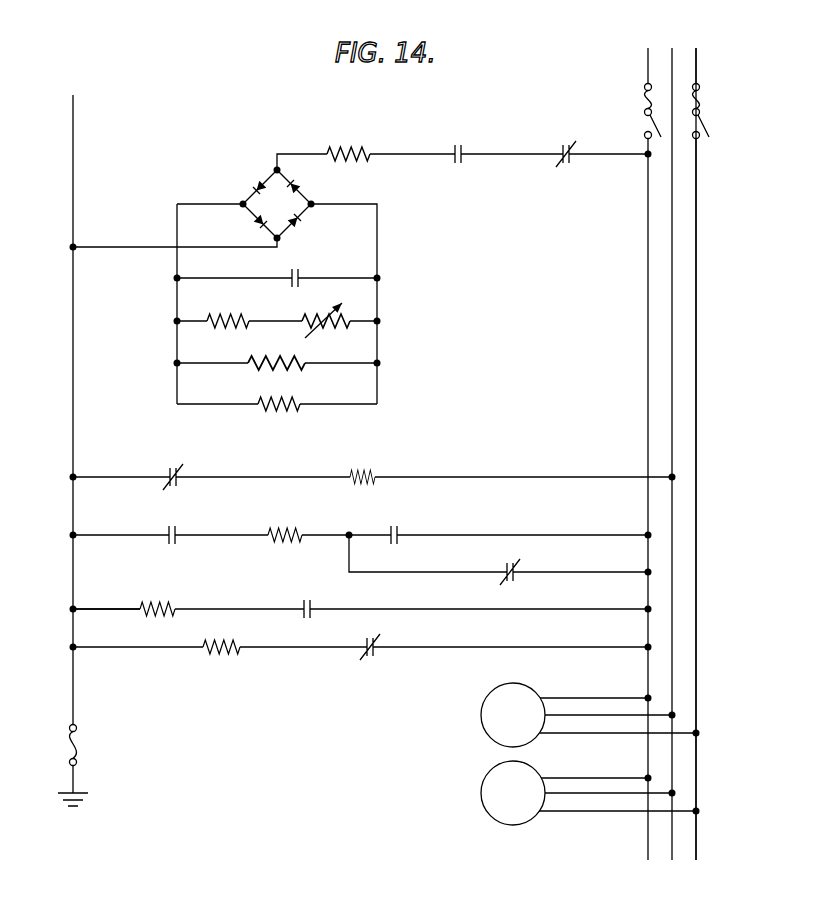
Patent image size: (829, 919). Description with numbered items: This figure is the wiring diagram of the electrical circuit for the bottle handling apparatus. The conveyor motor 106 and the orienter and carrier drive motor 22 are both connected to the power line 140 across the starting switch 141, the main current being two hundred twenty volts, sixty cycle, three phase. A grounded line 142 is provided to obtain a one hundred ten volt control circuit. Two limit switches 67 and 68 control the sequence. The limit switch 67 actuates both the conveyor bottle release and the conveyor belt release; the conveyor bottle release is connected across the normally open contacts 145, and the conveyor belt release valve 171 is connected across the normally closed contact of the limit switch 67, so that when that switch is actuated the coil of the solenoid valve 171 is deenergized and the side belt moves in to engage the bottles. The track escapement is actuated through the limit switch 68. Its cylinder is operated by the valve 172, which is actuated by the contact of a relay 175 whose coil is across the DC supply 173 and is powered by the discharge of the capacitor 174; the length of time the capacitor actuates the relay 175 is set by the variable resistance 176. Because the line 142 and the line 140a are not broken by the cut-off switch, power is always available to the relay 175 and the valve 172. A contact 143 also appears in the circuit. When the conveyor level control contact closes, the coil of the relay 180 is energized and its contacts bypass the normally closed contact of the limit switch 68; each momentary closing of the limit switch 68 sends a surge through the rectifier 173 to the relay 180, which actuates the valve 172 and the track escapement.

The starting switch 141 is at (645, 100).
The grounded line 142 is at (78, 203).
The normally closed contact 143 is at (570, 165).
The DC supply 173 is at (290, 226).
The capacitor 174 is at (300, 275).
The variable resistance 176 is at (352, 305).
The relay 175 is at (280, 412).
The valve 172 is at (375, 475).
The relay 180 is at (300, 530).
The limit switch 68 is at (510, 580).
The normally open contacts 145 is at (72, 612).
The conveyor belt release valve 171 is at (226, 656).
The limit switch 67 is at (373, 660).
The power line 140 is at (696, 262).
The line 140a is at (672, 300).
The orienter and carrier drive motor 22 is at (496, 735).
The conveyor motor 106 is at (503, 814).